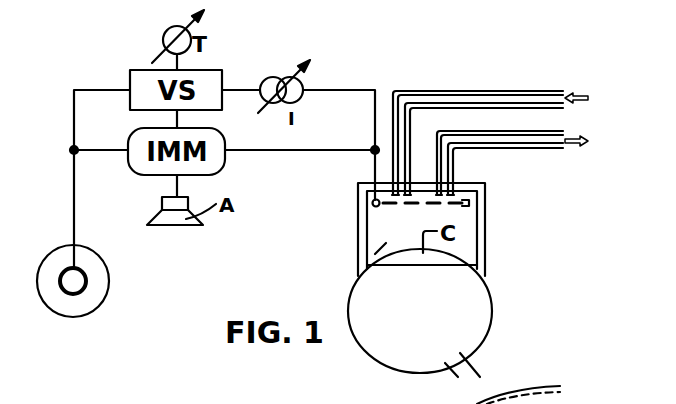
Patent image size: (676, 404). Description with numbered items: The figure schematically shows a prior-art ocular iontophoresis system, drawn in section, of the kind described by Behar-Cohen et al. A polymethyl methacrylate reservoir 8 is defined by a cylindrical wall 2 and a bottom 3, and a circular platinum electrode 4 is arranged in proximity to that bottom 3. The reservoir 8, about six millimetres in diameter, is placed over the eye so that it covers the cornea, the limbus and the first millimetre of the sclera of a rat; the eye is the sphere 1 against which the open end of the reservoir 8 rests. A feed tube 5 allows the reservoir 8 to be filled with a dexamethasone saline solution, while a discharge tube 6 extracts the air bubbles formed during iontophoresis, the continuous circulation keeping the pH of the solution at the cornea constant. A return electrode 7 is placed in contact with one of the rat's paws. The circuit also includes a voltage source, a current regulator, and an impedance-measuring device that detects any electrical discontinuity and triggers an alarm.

The ball / object under measurement 1 is at (498, 334).
The cylindrical wall 2 is at (467, 242).
The bottom 3 is at (468, 183).
The circular platinum electrode 4 is at (387, 207).
The feed tube 5 is at (513, 89).
The discharge tube 6 is at (527, 150).
The return electrode 7 is at (110, 283).
The reservoir 8 is at (367, 260).